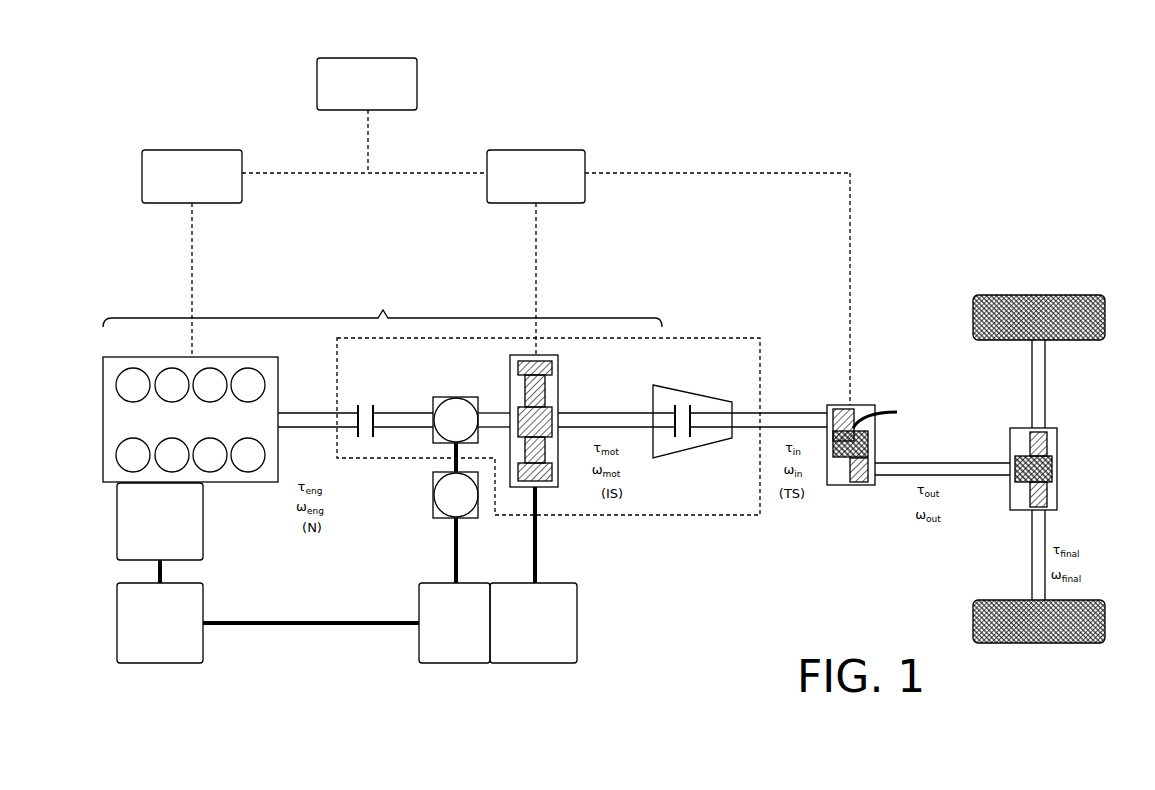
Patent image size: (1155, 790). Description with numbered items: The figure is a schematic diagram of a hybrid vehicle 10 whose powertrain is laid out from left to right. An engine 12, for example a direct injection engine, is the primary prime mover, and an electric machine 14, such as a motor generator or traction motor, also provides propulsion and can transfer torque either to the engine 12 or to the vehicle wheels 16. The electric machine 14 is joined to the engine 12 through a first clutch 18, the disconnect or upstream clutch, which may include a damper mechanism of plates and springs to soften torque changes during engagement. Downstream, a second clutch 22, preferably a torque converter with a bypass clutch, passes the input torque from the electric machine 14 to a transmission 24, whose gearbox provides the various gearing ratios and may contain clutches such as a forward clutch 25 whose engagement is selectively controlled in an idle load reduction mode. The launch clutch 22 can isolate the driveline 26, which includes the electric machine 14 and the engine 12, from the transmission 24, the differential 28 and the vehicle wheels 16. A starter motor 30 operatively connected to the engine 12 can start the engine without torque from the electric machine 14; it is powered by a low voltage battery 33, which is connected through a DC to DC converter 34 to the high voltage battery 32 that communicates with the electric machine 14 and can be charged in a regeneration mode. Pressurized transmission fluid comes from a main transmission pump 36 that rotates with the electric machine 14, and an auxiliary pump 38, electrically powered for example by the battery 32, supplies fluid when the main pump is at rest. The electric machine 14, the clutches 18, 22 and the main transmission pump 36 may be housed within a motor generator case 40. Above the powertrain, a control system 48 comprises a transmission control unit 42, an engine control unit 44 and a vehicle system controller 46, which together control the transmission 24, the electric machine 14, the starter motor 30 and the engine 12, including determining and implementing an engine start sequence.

The vehicle 10 is at (890, 143).
The engine 12 is at (190, 419).
The electric machine 14 is at (560, 392).
The vehicle wheels 16 is at (1040, 295).
The first clutch 18 is at (367, 405).
The second clutch 22 is at (683, 397).
The transmission 24 is at (862, 405).
The forward clutch 25 is at (891, 416).
The driveline 26 is at (382, 308).
The differential 28 is at (1045, 428).
The starter motor 30 is at (117, 522).
The battery 32 is at (556, 583).
The low voltage battery 33 is at (117, 623).
The DC to DC converter 34 is at (437, 583).
The main transmission pump 36 is at (453, 397).
The auxiliary pump 38 is at (433, 510).
The motor generator case 40 is at (668, 522).
The transmission control unit 42 is at (487, 164).
The engine control unit 44 is at (142, 176).
The vehicle system controller 46 is at (317, 82).
The control system 48 is at (540, 78).